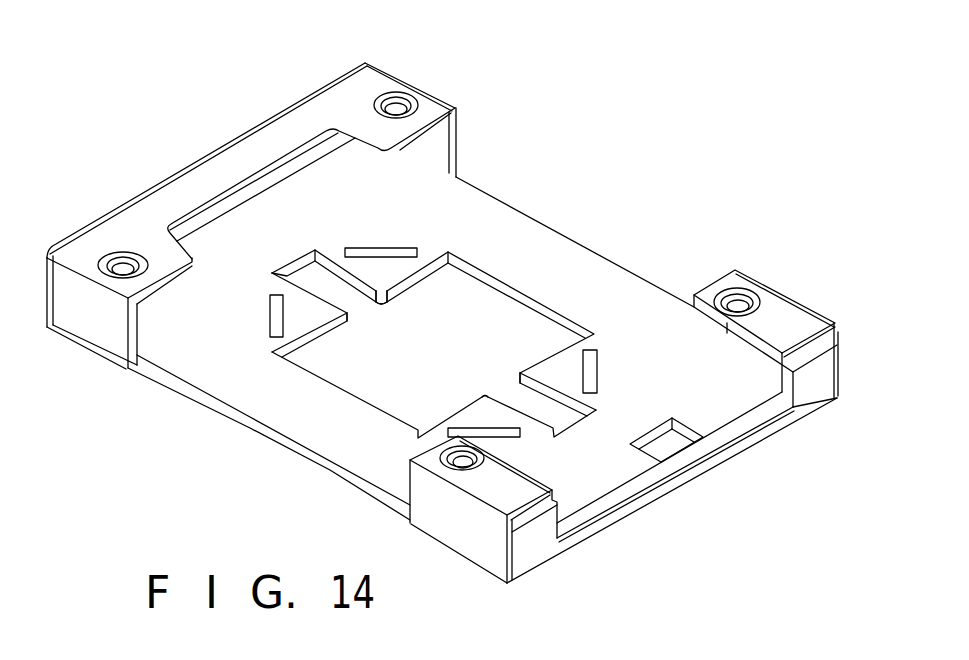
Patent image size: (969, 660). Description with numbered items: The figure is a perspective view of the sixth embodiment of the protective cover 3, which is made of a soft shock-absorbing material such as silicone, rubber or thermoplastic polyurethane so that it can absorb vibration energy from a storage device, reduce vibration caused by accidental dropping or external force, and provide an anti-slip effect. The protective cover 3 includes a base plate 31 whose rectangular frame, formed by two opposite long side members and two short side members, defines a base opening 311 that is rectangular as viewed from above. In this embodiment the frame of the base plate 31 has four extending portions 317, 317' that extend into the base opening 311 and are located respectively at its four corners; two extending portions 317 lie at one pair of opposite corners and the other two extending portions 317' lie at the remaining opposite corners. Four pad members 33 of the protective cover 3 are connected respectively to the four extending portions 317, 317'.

The protective cover 3 is at (702, 250).
The base plate 31 is at (585, 478).
The base opening 311 is at (488, 308).
The pad member 33 is at (393, 292).
The extending portion 317 is at (409, 336).
The extending portion 317' is at (488, 340).